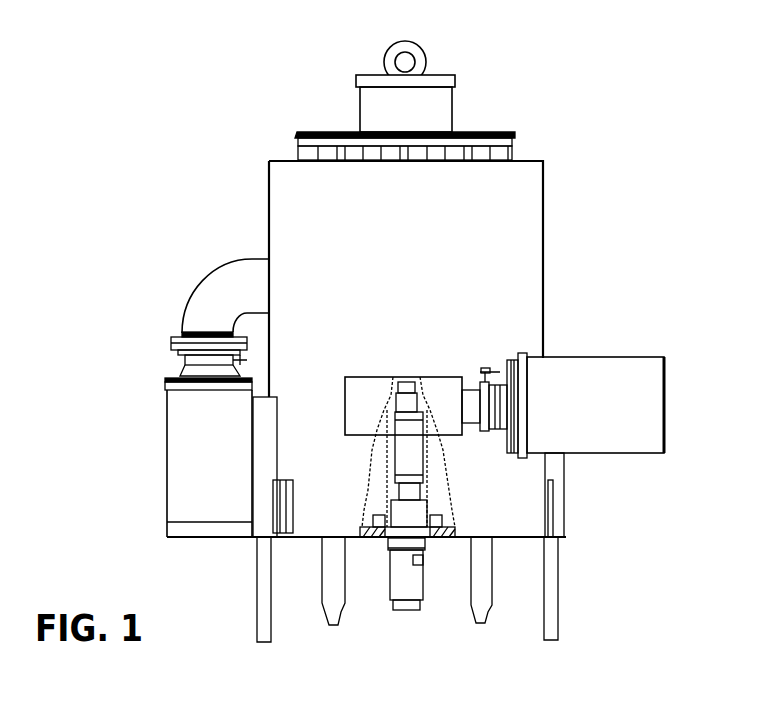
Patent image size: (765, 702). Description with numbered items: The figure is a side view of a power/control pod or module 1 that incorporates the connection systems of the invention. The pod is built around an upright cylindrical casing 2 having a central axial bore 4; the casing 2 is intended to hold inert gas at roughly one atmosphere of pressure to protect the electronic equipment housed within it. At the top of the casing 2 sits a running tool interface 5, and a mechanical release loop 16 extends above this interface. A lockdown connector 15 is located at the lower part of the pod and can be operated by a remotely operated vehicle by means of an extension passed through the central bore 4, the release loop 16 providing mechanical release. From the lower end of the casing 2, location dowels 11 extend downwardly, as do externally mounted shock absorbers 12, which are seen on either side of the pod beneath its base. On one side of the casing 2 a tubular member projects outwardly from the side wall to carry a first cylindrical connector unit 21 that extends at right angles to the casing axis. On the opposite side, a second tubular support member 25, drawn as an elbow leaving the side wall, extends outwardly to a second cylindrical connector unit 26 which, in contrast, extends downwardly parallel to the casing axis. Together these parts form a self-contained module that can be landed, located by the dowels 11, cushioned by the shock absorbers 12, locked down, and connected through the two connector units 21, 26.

The power/control pod or module 1 is at (547, 301).
The casing 2 is at (290, 219).
The central axial bore 4 is at (421, 450).
The running tool interface 5 is at (437, 106).
The location dowels 11 is at (337, 618).
The shock absorbers 12 is at (267, 560).
The lockdown connector 15 is at (412, 593).
The mechanical release loop 16 is at (418, 54).
The first cylindrical connector unit 21 is at (605, 381).
The second tubular support member 25 is at (208, 295).
The second cylindrical connector unit 26 is at (186, 508).